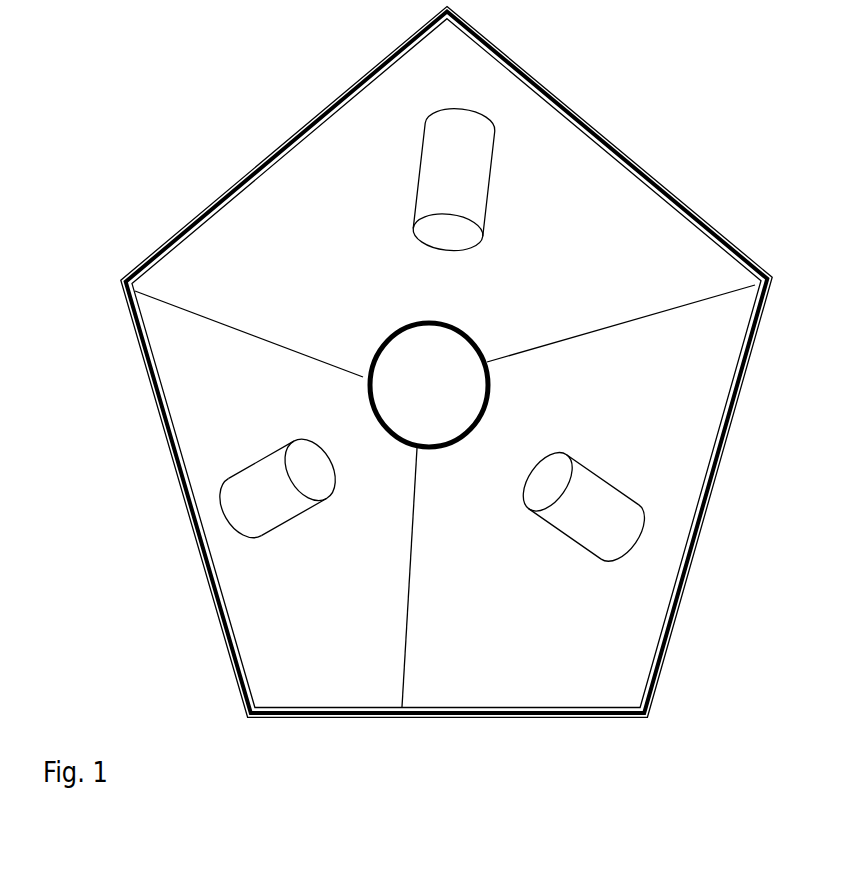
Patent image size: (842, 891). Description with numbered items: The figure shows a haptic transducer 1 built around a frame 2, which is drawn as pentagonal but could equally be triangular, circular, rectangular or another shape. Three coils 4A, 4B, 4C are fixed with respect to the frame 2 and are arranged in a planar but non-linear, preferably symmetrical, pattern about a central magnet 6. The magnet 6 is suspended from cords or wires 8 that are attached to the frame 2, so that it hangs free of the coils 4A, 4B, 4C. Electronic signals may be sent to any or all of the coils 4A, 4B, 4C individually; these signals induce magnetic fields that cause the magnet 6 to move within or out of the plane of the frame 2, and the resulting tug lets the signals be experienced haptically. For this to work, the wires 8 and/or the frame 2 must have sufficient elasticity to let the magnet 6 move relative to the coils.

The transducer 1 is at (182, 177).
The frame 2 is at (638, 165).
The coil 4A is at (276, 458).
The coil 4B is at (467, 200).
The coil 4C is at (598, 468).
The magnet 6 is at (470, 360).
The cords or wires 8 is at (407, 641).